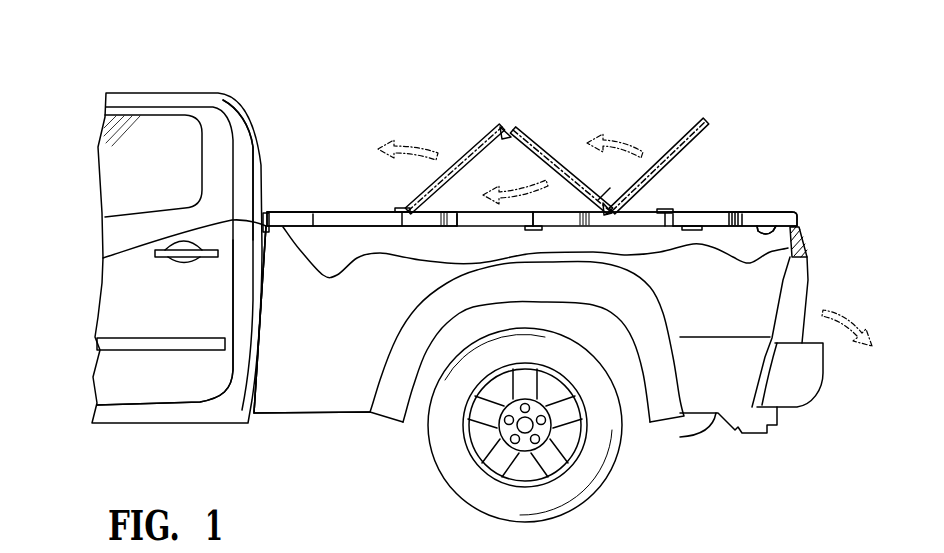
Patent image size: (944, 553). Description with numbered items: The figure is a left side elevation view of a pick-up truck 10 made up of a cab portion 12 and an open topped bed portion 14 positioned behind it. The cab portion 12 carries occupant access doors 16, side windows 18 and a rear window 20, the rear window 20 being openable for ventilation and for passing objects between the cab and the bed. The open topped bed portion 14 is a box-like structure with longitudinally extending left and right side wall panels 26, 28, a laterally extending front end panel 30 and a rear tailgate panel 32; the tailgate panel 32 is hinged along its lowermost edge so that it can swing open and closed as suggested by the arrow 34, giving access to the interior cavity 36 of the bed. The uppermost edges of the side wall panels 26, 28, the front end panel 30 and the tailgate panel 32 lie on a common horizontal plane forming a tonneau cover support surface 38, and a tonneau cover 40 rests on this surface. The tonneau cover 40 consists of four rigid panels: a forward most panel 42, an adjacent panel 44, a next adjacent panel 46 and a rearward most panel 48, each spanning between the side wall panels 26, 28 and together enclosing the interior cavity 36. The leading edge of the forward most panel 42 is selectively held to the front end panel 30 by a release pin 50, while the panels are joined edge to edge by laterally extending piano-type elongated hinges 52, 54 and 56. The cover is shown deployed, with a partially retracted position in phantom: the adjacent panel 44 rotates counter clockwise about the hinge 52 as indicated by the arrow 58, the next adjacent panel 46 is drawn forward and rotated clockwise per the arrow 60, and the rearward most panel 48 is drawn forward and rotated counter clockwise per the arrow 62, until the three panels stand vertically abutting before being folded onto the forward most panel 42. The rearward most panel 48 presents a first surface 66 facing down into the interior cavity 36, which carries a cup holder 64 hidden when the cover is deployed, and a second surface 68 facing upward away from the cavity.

The motor vehicle 10 is at (765, 106).
The cab portion 12 is at (170, 93).
The open topped bed portion 14 is at (328, 415).
The occupant access doors 16 is at (123, 380).
The side windows 18 is at (117, 170).
The rear window 20 is at (259, 142).
The left side wall panel 26 is at (307, 390).
The right side wall panel 28 is at (353, 250).
The front end panel 30 is at (268, 298).
The rear tailgate panel 32 is at (807, 243).
The arrow 34 is at (860, 313).
The interior cavity 36 is at (793, 240).
The tonneau cover support surface 38 is at (755, 212).
The tonneau cover 40 is at (677, 185).
The forward most panel 42 is at (313, 225).
The adjacent panel 44 is at (475, 143).
The next adjacent panel 46 is at (525, 120).
The rearward most panel 48 is at (757, 226).
The release pin 50 is at (120, 246).
The elongated hinge 52 is at (398, 210).
The elongated hinge 54 is at (533, 230).
The elongated hinge 56 is at (665, 212).
The arrow 58 is at (424, 143).
The arrow 60 is at (523, 182).
The arrow 62 is at (633, 140).
The cup holder 64 is at (692, 231).
The first surface 66 is at (777, 226).
The second surface 68 is at (740, 212).